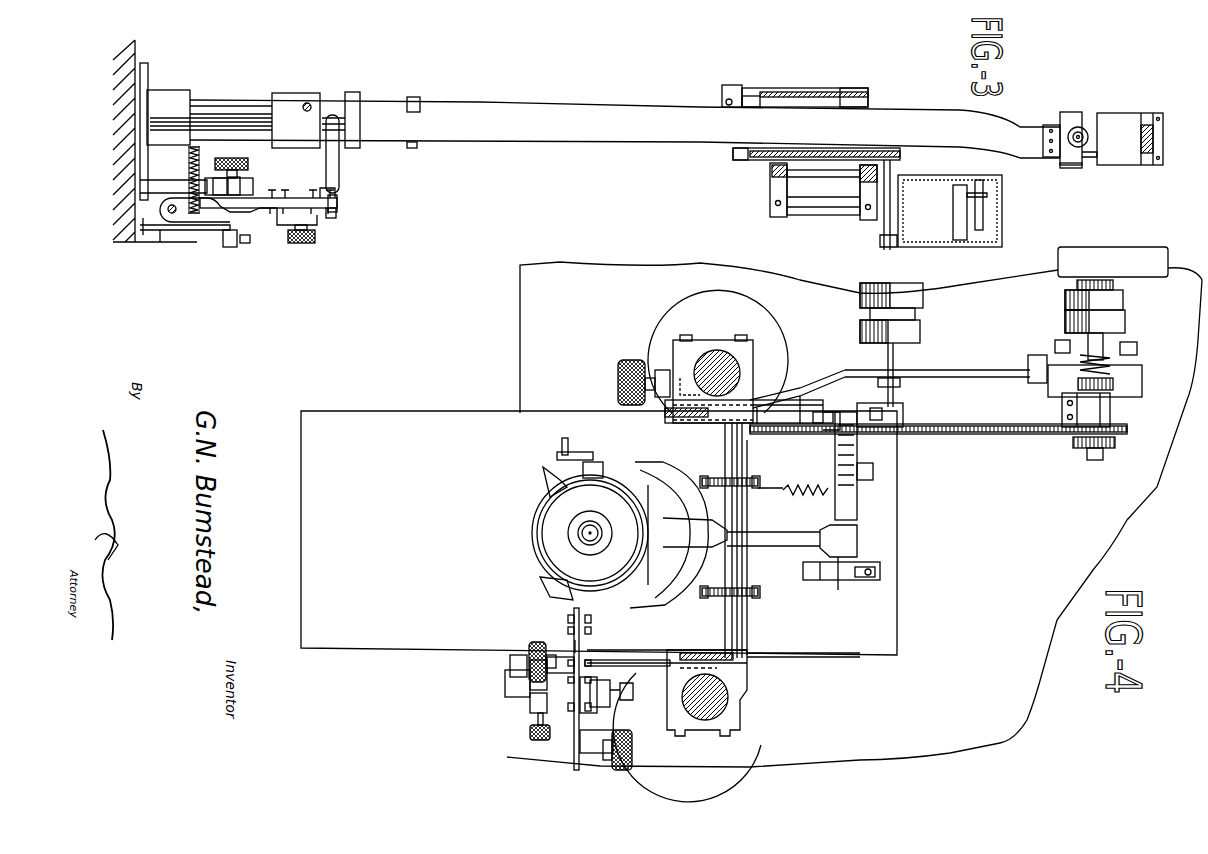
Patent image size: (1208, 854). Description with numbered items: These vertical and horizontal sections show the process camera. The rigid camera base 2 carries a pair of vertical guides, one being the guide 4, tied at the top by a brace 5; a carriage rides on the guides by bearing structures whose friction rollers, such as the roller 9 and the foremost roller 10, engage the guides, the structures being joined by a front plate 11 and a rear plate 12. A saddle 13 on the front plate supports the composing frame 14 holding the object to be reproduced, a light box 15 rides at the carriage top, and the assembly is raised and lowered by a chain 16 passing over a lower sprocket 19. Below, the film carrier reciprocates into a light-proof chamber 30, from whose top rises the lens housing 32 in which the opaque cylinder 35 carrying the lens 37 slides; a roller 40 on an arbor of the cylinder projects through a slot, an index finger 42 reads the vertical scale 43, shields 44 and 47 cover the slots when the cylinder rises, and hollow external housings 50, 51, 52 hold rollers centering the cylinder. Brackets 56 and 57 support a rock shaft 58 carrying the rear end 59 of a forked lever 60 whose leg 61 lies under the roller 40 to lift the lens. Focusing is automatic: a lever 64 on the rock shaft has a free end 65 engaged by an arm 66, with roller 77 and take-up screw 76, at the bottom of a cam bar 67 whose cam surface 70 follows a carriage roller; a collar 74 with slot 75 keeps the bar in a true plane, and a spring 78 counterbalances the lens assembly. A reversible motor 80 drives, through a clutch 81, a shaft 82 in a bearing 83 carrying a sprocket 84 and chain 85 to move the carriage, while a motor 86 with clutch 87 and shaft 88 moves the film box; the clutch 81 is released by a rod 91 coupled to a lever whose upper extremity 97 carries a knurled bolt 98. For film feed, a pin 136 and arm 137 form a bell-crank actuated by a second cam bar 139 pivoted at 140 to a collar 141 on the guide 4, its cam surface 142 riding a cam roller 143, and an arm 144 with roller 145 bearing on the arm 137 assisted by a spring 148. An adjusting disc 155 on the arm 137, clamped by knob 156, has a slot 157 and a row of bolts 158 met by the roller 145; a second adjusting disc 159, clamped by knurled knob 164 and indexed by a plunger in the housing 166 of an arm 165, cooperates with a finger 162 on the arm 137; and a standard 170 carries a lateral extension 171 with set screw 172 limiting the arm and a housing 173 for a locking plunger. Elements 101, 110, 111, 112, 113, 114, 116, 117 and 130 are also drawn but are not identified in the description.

In FIG. 3, the camera base 2 is at (150, 60).
In FIG. 4, the camera base 2 is at (603, 265).
In FIG. 3, the guide 4 is at (258, 100).
In FIG. 4, the guide 4 is at (710, 355).
In FIG. 3, the brace 5 is at (1150, 132).
In FIG. 3, the third roller 9 is at (730, 152).
In FIG. 3, the foremost roller 10 is at (735, 160).
In FIG. 3, the front plate 11 is at (770, 175).
In FIG. 3, the rear plate 12 is at (800, 88).
In FIG. 3, the saddle 13 is at (882, 238).
In FIG. 3, the composing frame 14 is at (955, 210).
In FIG. 3, the light box 15 is at (1003, 192).
In FIG. 4, the chain 16 is at (755, 438).
In FIG. 4, the lower sprocket 19 is at (705, 478).
In FIG. 4, the chamber 30 is at (875, 655).
In FIG. 4, the lens housing 32 is at (535, 515).
In FIG. 4, the cylinder 35 is at (580, 530).
In FIG. 4, the lens 37 is at (600, 533).
In FIG. 4, the roller 40 is at (595, 460).
In FIG. 4, the index finger 42 is at (555, 455).
In FIG. 4, the vertical scale 43 is at (560, 438).
In FIG. 4, the shield 44 is at (615, 650).
In FIG. 4, the duplicate shield 47 is at (645, 540).
In FIG. 4, the hollow external housing 50 is at (660, 505).
In FIG. 4, the hollow external housing 51 is at (545, 478).
In FIG. 4, the hollow external housing 52 is at (545, 585).
In FIG. 4, the bracket 56 is at (875, 385).
In FIG. 4, the bracket 57 is at (862, 582).
In FIG. 4, the rock shaft 58 is at (835, 582).
In FIG. 4, the rear end 59 is at (860, 537).
In FIG. 4, the lever 60 is at (780, 548).
In FIG. 4, the fork leg 61 is at (688, 385).
In FIG. 4, the lever 64 is at (858, 495).
In FIG. 4, the free end 65 is at (810, 395).
In FIG. 4, the arm 66 is at (785, 430).
In FIG. 4, the cam bar 67 is at (700, 445).
In FIG. 4, the cam surface 70 is at (700, 440).
In FIG. 4, the collar 74 is at (735, 340).
In FIG. 4, the slot 75 is at (745, 415).
In FIG. 4, the take-up screw 76 is at (822, 432).
In FIG. 4, the roller 77 is at (800, 435).
In FIG. 4, the spring 78 is at (805, 492).
In FIG. 4, the reversible electric motor 80 is at (1120, 255).
In FIG. 4, the clutch 81 is at (1125, 318).
In FIG. 4, the shaft 82 is at (1095, 460).
In FIG. 4, the bearing 83 is at (1115, 410).
In FIG. 4, the sprocket 84 is at (1117, 445).
In FIG. 4, the chain 85 is at (1038, 435).
In FIG. 4, the reversible electric motor 86 is at (925, 298).
In FIG. 4, the clutch 87 is at (920, 330).
In FIG. 4, the shaft 88 is at (843, 372).
In FIG. 4, the rod 91 is at (810, 372).
In FIG. 4, the upper extremity 97 is at (662, 370).
In FIG. 4, the bolt 98 is at (620, 365).
In FIG. 4, the pin 101 is at (640, 438).
In FIG. 4, the block 110 is at (505, 678).
In FIG. 4, the screw 111 is at (520, 660).
In FIG. 4, the block 112 is at (565, 700).
In FIG. 4, the slide 113 is at (596, 740).
In FIG. 4, the knob 114 is at (530, 730).
In FIG. 4, the screw 116 is at (757, 598).
In FIG. 4, the rod 117 is at (748, 600).
In FIG. 4, the rail 130 is at (683, 652).
In FIG. 3, the pin 136 is at (178, 228).
In FIG. 3, the bell-crank arm 137 is at (275, 212).
In FIG. 3, the second cam bar 139 is at (655, 120).
In FIG. 3, the pivot 140 is at (1082, 128).
In FIG. 3, the collar 141 is at (1070, 112).
In FIG. 3, the cam surface 142 is at (600, 107).
In FIG. 3, the cam roller 143 is at (725, 92).
In FIG. 3, the arm 144 is at (345, 125).
In FIG. 3, the roller 145 is at (340, 185).
In FIG. 3, the spring 148 is at (185, 125).
In FIG. 3, the adjusting disc 155 is at (340, 200).
In FIG. 4, the adjusting disc 155 is at (530, 645).
In FIG. 3, the knob 156 is at (305, 243).
In FIG. 4, the slot 157 is at (562, 657).
In FIG. 3, the bolts 158 is at (333, 222).
In FIG. 4, the bolts 158 is at (605, 640).
In FIG. 3, the second adjusting disc 159 is at (190, 180).
In FIG. 4, the second adjusting disc 159 is at (574, 730).
In FIG. 3, the finger 162 is at (178, 215).
In FIG. 4, the finger 162 is at (640, 660).
In FIG. 4, the knurled knob 164 is at (660, 725).
In FIG. 3, the arm 165 is at (208, 118).
In FIG. 3, the bearing and housing 166 is at (253, 190).
In FIG. 3, the standard 170 is at (165, 242).
In FIG. 3, the lateral extension 171 is at (252, 243).
In FIG. 4, the set screw 172 is at (505, 665).
In FIG. 3, the bearing and housing 173 is at (231, 247).